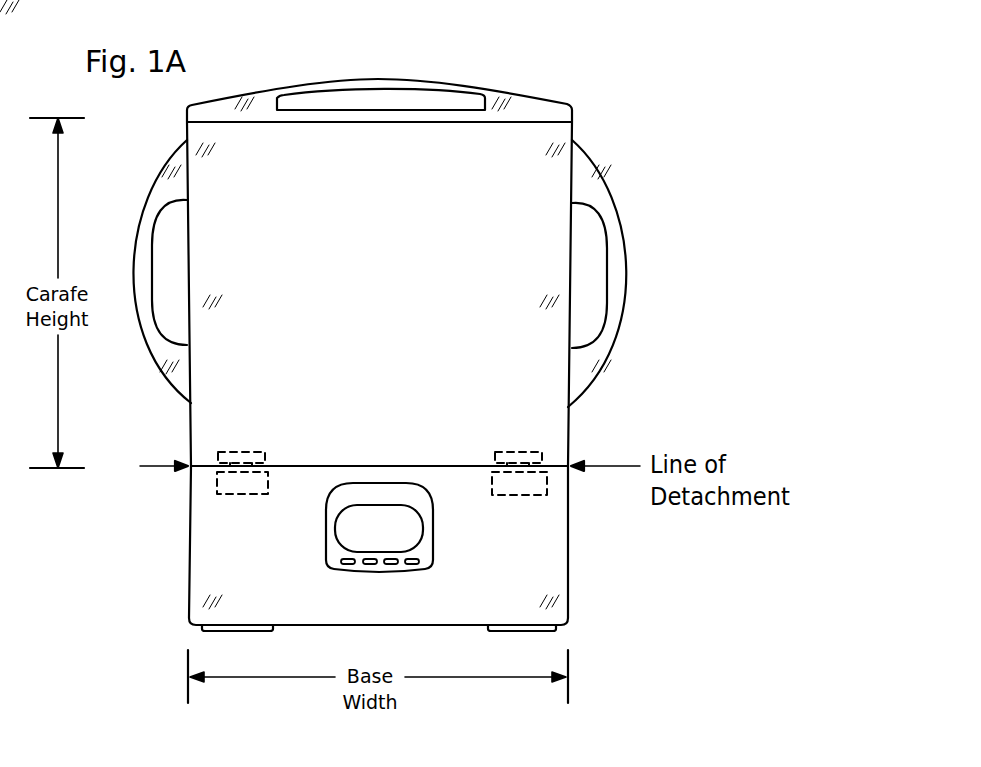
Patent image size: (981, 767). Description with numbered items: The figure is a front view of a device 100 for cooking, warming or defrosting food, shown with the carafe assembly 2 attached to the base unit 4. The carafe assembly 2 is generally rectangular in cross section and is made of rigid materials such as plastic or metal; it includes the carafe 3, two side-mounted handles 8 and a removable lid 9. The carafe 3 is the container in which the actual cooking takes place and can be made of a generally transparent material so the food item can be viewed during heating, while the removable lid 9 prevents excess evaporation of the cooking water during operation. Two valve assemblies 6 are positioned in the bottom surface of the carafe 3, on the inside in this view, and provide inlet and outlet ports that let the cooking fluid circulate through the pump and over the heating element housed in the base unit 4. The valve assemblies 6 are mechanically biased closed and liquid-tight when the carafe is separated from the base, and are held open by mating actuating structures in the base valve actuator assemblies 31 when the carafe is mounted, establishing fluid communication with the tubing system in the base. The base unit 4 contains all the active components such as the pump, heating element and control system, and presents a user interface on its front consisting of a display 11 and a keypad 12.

The device 100 is at (274, 57).
The carafe assembly 2 is at (440, 246).
The carafe 3 is at (379, 294).
The base unit 4 is at (188, 568).
The valve assemblies 6 is at (233, 452).
The handles 8 is at (168, 170).
The removable lid 9 is at (532, 105).
The display 11 is at (421, 532).
The keypad 12 is at (370, 566).
The base valve actuator assemblies 31 is at (240, 494).